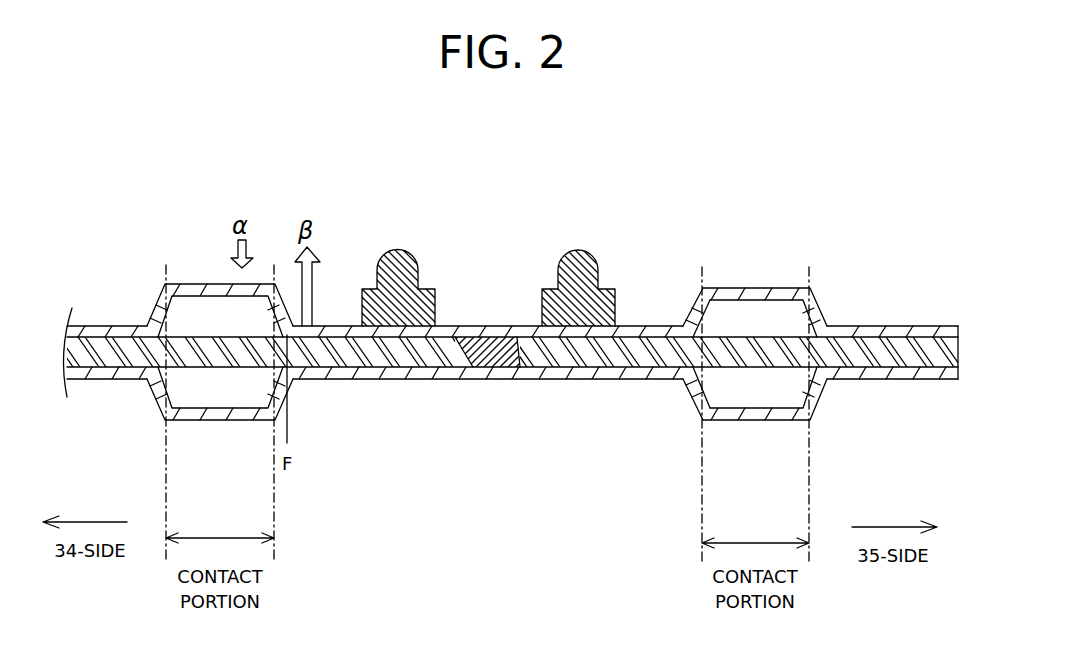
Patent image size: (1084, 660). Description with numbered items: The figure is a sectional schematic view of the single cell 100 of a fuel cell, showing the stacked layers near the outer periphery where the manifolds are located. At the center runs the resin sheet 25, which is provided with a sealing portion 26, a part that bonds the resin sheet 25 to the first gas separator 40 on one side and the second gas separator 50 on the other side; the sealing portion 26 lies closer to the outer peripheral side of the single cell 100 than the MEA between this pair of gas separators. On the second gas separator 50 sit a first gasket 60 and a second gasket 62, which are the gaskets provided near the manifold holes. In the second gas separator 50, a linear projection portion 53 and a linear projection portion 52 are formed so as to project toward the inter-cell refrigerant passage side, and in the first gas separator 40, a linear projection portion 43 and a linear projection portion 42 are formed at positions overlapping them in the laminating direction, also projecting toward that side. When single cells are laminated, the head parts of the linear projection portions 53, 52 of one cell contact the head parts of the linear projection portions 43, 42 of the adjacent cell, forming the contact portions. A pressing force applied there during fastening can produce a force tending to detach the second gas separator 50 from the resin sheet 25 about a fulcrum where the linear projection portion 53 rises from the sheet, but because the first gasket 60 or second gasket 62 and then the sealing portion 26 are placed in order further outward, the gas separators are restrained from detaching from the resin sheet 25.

The single cell 100 is at (851, 196).
The resin sheet 25 is at (912, 338).
The sealing portion 26 is at (473, 358).
The linear projection portion 53 is at (191, 283).
The linear projection portion 43 is at (218, 418).
The linear projection portion 52 is at (751, 288).
The linear projection portion 42 is at (752, 420).
The second gas separator 50 is at (692, 306).
The first gas separator 40 is at (686, 390).
The first gasket 60 is at (412, 252).
The second gasket 62 is at (588, 252).